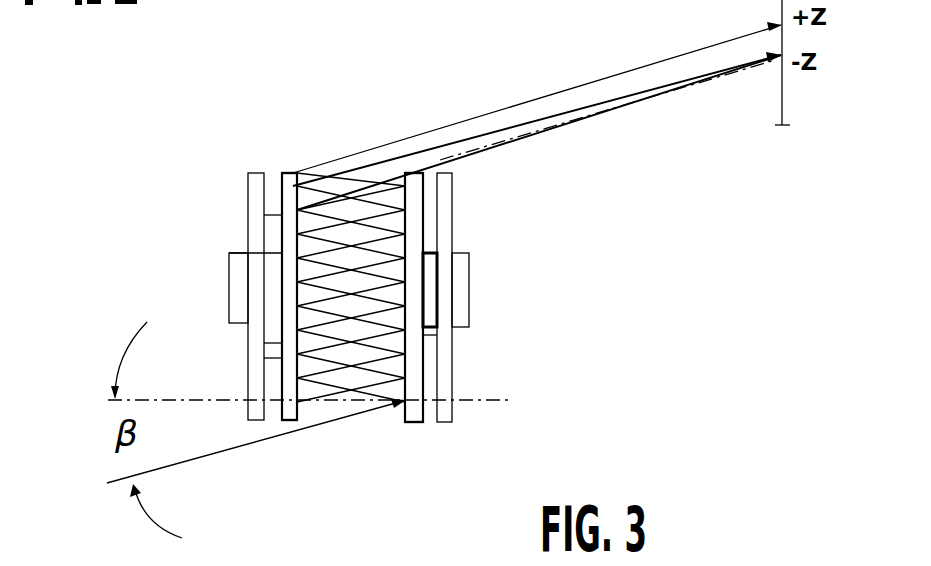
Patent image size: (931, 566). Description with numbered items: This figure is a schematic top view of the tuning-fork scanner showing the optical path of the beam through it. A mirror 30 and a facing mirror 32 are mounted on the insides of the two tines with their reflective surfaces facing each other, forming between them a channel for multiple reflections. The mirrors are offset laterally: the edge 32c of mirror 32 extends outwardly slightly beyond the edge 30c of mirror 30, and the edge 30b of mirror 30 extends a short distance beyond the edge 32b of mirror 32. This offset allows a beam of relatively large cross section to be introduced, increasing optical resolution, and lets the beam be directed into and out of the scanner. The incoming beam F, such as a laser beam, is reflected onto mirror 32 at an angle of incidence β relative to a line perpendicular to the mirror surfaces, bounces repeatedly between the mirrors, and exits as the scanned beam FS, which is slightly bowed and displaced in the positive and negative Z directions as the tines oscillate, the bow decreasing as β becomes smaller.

The mirror 30 is at (282, 347).
The edge of mirror 30 30b is at (286, 172).
The edge of mirror 30 30c is at (282, 410).
The mirror 32 is at (417, 356).
The edge of mirror 32 32b is at (418, 174).
The edge of mirror 32 32c is at (410, 422).
The incoming beam F is at (257, 443).
The scanned beam FS is at (521, 102).